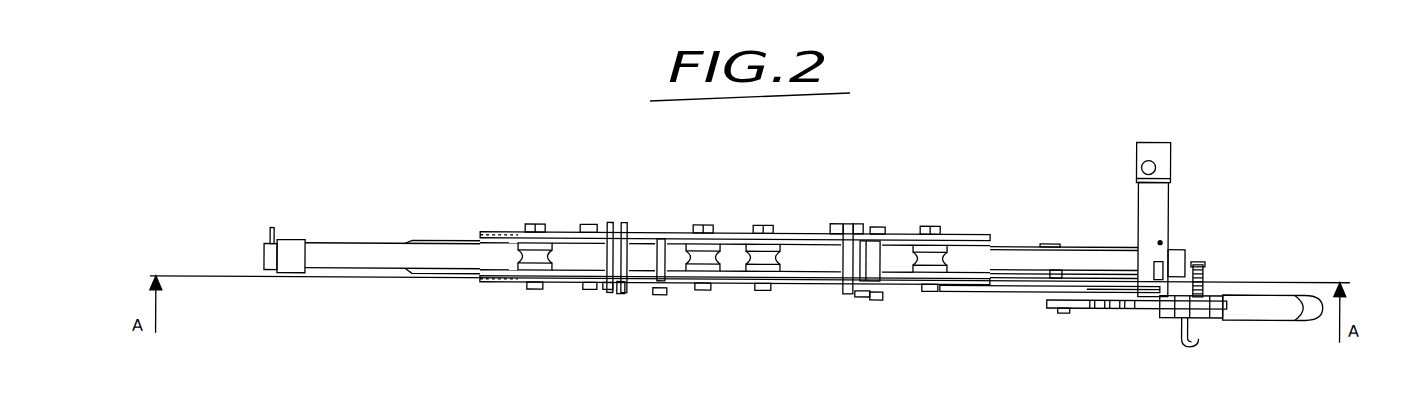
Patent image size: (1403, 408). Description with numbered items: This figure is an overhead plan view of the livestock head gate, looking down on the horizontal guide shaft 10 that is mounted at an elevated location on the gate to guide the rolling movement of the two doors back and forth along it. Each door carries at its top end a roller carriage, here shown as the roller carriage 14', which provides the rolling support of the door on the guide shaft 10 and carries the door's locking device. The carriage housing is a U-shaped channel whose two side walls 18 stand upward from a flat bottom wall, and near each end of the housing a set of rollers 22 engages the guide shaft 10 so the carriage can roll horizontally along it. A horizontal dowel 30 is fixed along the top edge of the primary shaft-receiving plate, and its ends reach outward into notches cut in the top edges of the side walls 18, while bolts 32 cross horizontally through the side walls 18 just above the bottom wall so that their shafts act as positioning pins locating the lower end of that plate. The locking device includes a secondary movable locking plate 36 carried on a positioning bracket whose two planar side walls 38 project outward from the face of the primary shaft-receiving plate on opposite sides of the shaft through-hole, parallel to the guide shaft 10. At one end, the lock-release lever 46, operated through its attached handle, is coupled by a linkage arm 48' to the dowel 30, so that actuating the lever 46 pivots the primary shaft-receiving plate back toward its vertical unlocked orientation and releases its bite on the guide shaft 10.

The guide shaft 10 is at (320, 257).
The roller carriage 14' is at (833, 206).
The side walls 18 is at (548, 228).
The rollers 22 is at (523, 238).
The horizontal dowel 30 is at (623, 223).
The bolts 32 is at (835, 223).
The secondary movable locking plate 36 is at (608, 294).
The bracket side walls 38 is at (583, 225).
The lock-release lever 46 is at (1090, 306).
The linkage arm 48' is at (1049, 323).